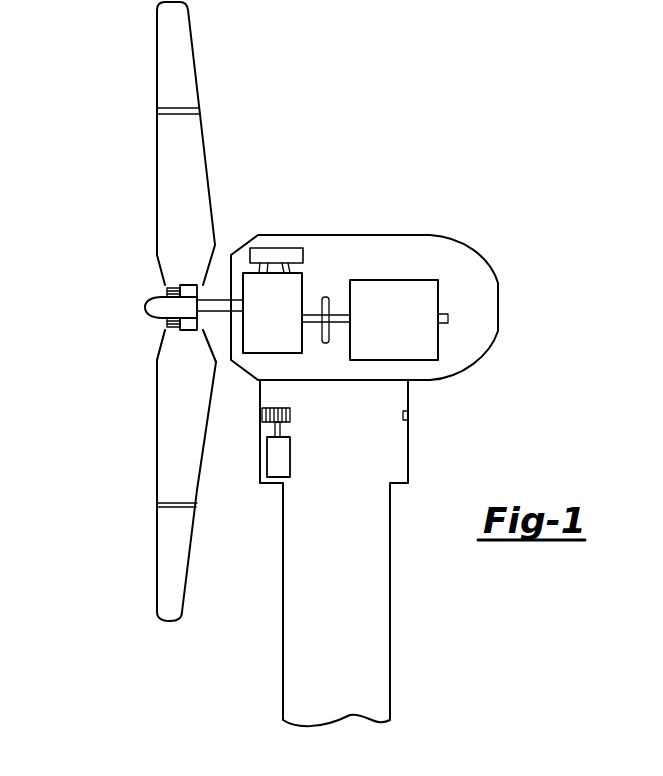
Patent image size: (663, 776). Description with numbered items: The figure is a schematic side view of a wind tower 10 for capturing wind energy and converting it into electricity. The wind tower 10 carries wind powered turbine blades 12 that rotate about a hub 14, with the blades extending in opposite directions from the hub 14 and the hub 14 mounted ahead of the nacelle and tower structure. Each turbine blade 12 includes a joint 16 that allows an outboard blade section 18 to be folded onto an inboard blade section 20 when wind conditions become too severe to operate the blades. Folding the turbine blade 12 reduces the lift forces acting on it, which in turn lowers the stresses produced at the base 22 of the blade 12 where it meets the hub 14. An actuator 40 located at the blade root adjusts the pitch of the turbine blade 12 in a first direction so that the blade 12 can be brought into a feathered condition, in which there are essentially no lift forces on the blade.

The wind tower 10 is at (190, 665).
The turbine blades 12 is at (140, 146).
The hub 14 is at (145, 307).
The joint 16 is at (148, 505).
The outboard blade section 18 is at (157, 572).
The inboard blade section 20 is at (157, 471).
The base 22 is at (147, 333).
The actuator 40 is at (183, 282).